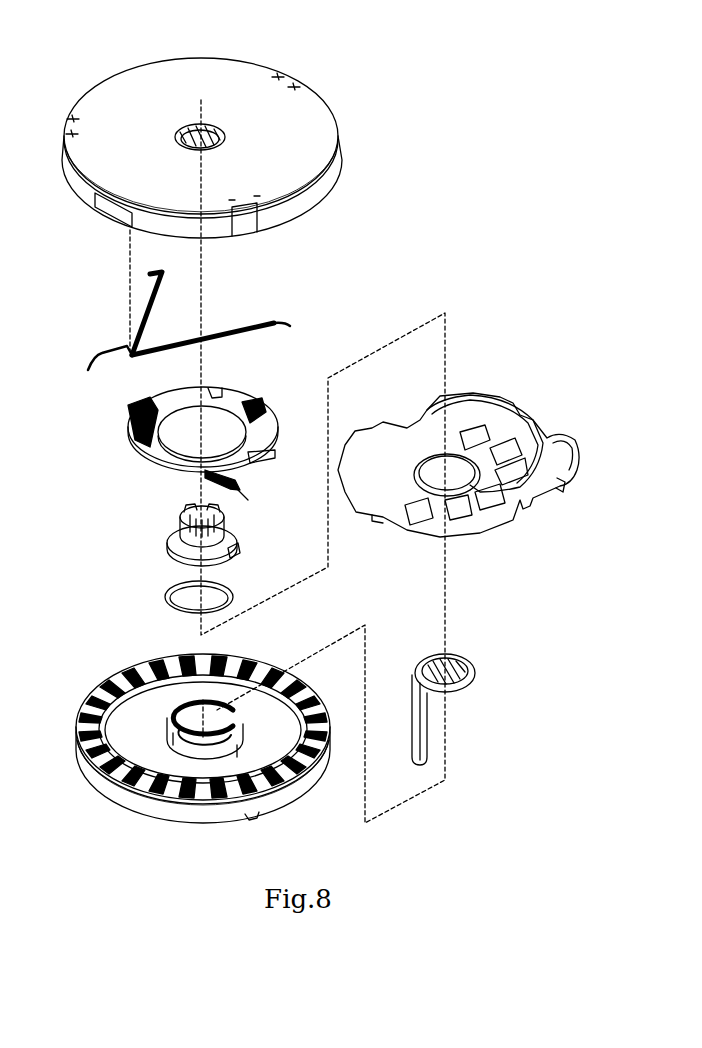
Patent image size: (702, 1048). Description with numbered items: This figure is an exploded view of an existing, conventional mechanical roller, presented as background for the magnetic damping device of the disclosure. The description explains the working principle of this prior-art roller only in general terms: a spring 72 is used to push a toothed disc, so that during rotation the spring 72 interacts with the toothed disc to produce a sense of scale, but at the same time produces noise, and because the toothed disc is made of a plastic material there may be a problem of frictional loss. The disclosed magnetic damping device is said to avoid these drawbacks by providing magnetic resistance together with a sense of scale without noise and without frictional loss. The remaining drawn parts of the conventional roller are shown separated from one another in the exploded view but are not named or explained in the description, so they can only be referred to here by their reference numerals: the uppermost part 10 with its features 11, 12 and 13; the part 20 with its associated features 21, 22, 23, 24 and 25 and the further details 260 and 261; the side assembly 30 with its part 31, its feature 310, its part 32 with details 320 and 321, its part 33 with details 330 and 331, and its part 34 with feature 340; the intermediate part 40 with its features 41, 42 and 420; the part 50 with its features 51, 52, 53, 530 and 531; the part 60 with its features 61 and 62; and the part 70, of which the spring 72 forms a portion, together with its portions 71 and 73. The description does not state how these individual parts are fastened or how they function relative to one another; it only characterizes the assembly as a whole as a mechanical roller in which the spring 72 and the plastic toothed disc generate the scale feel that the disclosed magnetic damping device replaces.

The top cover disc 10 is at (330, 110).
The center hole 11 is at (212, 124).
The rim notch 12 is at (250, 222).
The rim tab 13 is at (103, 212).
The base ring 20 is at (195, 732).
The base ring bottom 21 is at (161, 804).
The center clip 22 is at (240, 708).
The base tab 23 is at (290, 788).
The base rim 24 is at (212, 810).
The teeth 25 is at (110, 673).
The inner step 260 is at (257, 680).
The inner edge 261 is at (240, 670).
The rotor assembly 30 is at (458, 550).
The rotor body 31 is at (475, 395).
The rotor hole 310 is at (435, 466).
The rotor plate 32 is at (566, 436).
The lower window 320 is at (397, 520).
The lower windows 321 is at (465, 515).
The raised sector 33 is at (488, 419).
The upper window 330 is at (490, 410).
The upper window 331 is at (462, 410).
The peg rod 34 is at (425, 655).
The peg head 340 is at (465, 660).
The hub 40 is at (194, 528).
The hub tabs 41 is at (190, 506).
The hub lug 42 is at (240, 537).
The hub cylinder 420 is at (180, 522).
The retaining ring 50 is at (199, 439).
The ring tab 51 is at (278, 425).
The ring notch 52 is at (218, 423).
The ring arm 53 is at (270, 460).
The arm end 530 is at (238, 490).
The arm hook 531 is at (238, 484).
The washer 60 is at (185, 604).
The washer edge 61 is at (182, 613).
The washer face 62 is at (217, 593).
The spring wire 70 is at (203, 327).
The wire end 71 is at (107, 365).
The spring 72 is at (150, 273).
The wire hook 73 is at (290, 326).